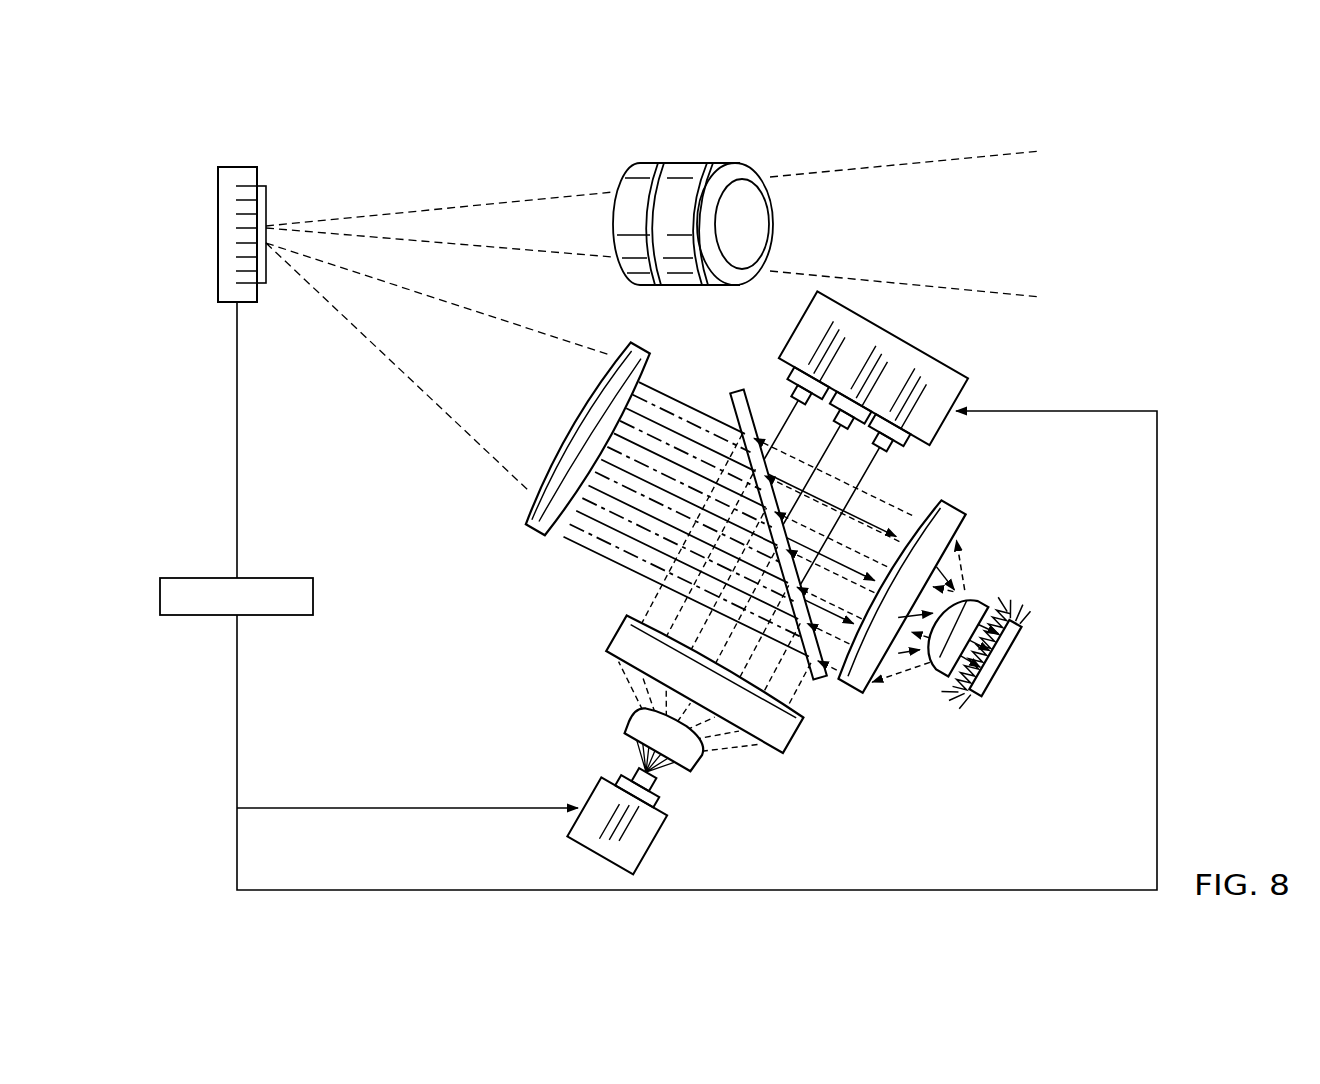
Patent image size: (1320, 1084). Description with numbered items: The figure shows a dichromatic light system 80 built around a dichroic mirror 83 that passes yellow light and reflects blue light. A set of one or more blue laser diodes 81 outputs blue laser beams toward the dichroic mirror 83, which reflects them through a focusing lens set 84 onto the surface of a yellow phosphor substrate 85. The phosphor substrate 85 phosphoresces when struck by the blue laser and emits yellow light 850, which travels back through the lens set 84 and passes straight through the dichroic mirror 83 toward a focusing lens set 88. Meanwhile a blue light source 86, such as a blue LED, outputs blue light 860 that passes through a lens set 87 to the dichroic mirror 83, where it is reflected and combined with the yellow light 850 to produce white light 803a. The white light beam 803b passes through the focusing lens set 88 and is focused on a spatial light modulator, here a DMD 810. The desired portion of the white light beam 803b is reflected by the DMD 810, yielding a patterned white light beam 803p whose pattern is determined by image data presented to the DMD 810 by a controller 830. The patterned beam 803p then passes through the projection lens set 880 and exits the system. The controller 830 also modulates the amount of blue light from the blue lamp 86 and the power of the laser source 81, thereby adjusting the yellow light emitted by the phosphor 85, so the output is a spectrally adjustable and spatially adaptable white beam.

The system 80 is at (1146, 186).
The blue laser 81 is at (888, 333).
The dichroic mirror 83 is at (822, 686).
The focusing lens set 84 is at (990, 553).
The yellow phosphor substrate 85 is at (1010, 678).
The blue light source 86 is at (652, 850).
The lens set 87 is at (597, 686).
The focusing lens set 88 is at (522, 532).
The DMD 810 is at (237, 167).
The controller 830 is at (160, 597).
The yellow light 850 is at (918, 497).
The blue light 860 is at (618, 586).
The projection lens set 880 is at (706, 163).
The white light 803a is at (700, 384).
The white light beam 803b is at (438, 367).
The patterned white light beam 803p is at (490, 203).